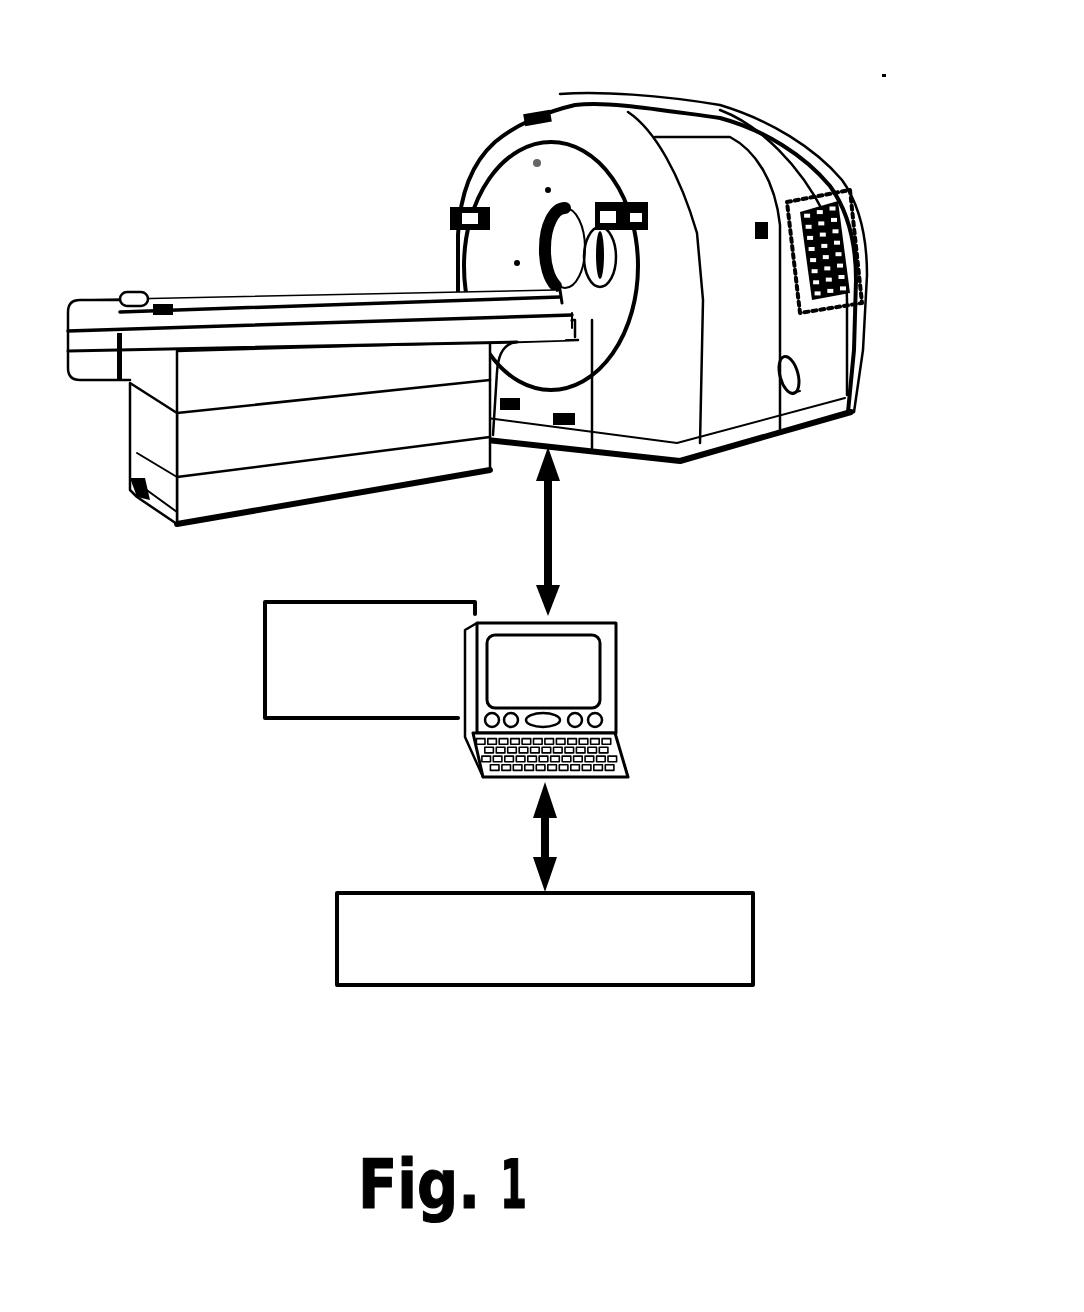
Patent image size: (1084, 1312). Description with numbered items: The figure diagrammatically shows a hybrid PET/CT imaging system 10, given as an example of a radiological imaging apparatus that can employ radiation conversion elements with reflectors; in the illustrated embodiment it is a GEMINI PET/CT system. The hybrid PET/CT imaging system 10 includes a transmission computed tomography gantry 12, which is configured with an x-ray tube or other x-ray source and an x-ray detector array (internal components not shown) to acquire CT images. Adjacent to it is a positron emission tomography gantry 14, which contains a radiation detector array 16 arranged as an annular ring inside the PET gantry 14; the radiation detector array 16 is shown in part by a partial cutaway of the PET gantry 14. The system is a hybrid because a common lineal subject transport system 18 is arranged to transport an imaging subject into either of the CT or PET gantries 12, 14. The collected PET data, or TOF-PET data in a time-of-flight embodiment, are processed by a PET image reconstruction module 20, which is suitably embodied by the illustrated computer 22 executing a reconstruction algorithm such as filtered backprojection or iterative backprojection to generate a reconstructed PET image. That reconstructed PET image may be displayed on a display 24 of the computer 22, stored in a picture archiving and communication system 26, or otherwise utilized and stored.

The hybrid PET/CT imaging system 10 is at (292, 84).
The transmission computed tomography gantry 12 is at (667, 117).
The positron emission tomography gantry 14 is at (790, 158).
The radiation detector array 16 is at (880, 217).
The lineal subject transport system 18 is at (321, 300).
The PET image reconstruction module 20 is at (264, 656).
The computer 22 is at (622, 696).
The display 24 is at (575, 667).
The picture archiving and communication system 26 is at (337, 933).